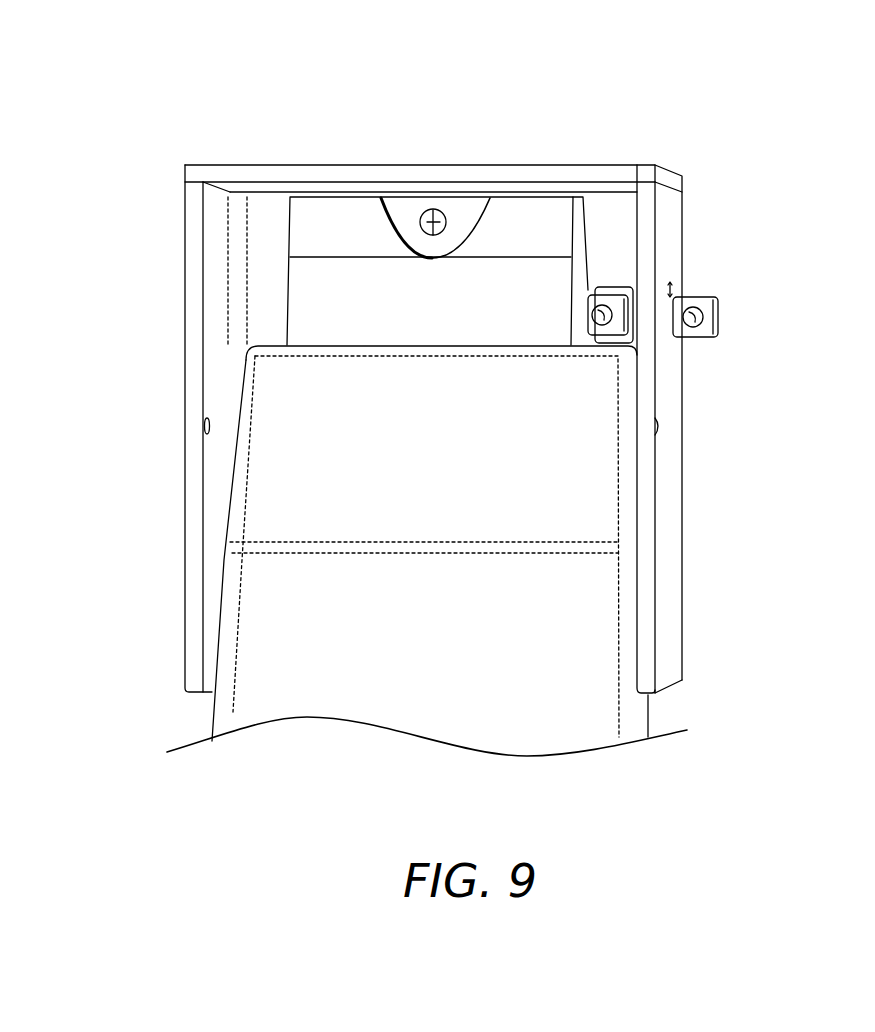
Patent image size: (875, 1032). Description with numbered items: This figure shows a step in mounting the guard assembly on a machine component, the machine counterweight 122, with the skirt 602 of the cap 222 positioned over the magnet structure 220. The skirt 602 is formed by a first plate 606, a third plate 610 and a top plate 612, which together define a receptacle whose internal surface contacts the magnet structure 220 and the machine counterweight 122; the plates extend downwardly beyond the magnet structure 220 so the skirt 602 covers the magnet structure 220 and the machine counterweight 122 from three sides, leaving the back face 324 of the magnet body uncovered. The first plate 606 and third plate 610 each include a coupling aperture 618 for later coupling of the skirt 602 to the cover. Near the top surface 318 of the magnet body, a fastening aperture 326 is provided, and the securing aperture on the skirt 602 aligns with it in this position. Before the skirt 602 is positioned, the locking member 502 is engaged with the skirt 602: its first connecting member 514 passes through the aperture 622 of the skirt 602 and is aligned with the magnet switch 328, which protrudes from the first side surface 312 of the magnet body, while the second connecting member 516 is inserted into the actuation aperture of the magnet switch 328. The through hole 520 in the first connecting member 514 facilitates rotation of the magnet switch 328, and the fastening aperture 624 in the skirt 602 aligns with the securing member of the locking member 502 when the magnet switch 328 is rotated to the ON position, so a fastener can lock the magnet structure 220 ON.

The machine counterweight 122 is at (286, 494).
The magnet structure 220 is at (326, 231).
The cap 222 is at (471, 164).
The first side surface 312 is at (580, 237).
The top surface 318 is at (344, 197).
The back face 324 is at (310, 300).
The fastening aperture 326 is at (420, 221).
The magnet switch 328 is at (595, 286).
The locking member 502 is at (612, 284).
The first connecting member 514 is at (719, 315).
The second connecting member 516 is at (605, 318).
The through hole 520 is at (693, 318).
The skirt 602 is at (684, 203).
The first plate 606 is at (668, 515).
The third plate 610 is at (185, 348).
The top plate 612 is at (613, 165).
The coupling aperture 618 is at (659, 432).
The aperture 622 is at (679, 293).
The fastening aperture 624 is at (678, 291).